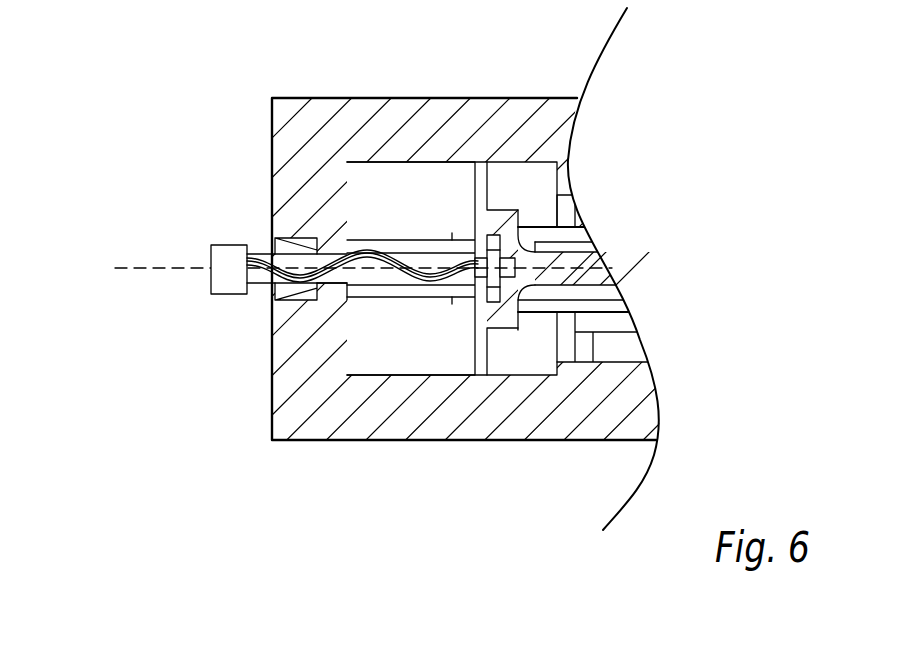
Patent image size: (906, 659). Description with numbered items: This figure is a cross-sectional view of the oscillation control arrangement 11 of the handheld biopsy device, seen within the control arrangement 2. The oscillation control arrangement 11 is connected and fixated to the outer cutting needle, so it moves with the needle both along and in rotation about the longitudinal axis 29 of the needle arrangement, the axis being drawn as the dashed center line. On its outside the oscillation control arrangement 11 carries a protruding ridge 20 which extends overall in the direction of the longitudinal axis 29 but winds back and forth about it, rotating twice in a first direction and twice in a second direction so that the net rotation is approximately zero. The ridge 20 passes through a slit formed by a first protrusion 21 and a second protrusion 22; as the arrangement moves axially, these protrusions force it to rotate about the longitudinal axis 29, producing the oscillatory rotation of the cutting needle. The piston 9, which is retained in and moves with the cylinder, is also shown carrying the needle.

The control arrangement 2 is at (347, 408).
The piston 9 is at (502, 312).
The oscillation control arrangement 11 is at (260, 283).
The protruding ridge 20 is at (260, 263).
The first protrusion 21 is at (321, 262).
The second protrusion 22 is at (328, 283).
The longitudinal axis 29 is at (160, 267).